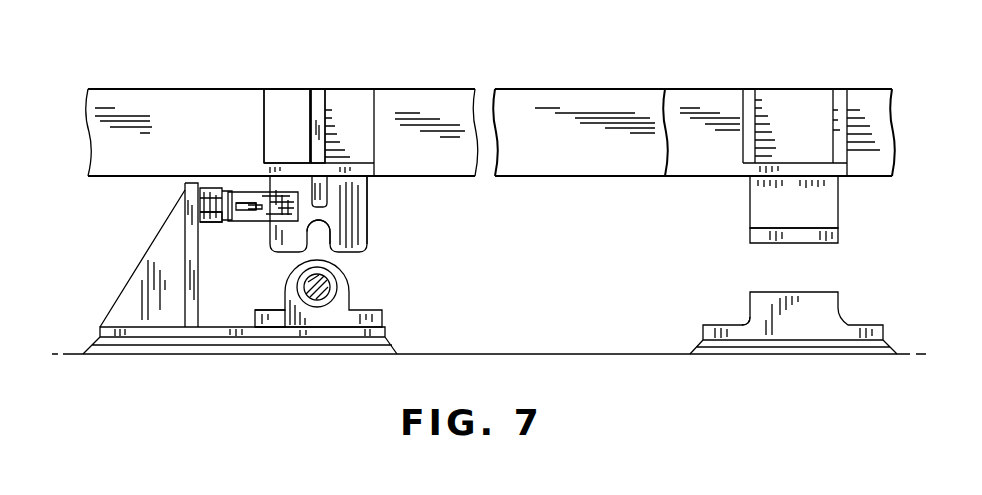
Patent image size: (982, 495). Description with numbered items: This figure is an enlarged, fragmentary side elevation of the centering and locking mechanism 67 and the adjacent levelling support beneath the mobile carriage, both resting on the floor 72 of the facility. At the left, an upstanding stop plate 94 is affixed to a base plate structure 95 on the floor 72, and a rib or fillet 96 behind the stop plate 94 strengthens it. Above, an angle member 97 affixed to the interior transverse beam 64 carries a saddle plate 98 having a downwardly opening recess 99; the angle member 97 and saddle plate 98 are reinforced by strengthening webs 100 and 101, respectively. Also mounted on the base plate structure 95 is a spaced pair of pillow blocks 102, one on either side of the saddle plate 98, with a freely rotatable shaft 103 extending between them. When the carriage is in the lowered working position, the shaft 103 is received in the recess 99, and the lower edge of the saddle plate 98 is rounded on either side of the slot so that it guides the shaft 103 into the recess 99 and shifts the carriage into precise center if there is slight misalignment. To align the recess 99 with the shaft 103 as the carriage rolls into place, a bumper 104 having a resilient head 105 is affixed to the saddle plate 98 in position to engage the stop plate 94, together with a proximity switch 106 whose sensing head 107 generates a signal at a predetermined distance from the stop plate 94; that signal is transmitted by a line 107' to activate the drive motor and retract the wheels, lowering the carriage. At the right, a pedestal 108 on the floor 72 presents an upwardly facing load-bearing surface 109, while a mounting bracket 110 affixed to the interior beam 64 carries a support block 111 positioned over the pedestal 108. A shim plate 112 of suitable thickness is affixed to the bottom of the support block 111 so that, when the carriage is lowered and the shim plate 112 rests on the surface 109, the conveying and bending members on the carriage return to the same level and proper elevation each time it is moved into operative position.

The interior transverse beam 64 is at (131, 104).
The centering and locking mechanism 67 is at (372, 237).
The floor 72 is at (505, 354).
The stop plate 94 is at (190, 240).
The base plate structure 95 is at (210, 333).
The rib or fillet 96 is at (128, 310).
The angle member 97 is at (292, 100).
The saddle plate 98 is at (367, 188).
The recess 99 is at (336, 232).
The strengthening web 100 is at (323, 105).
The strengthening web 101 is at (306, 180).
The pillow block 102 is at (288, 320).
The shaft 103 is at (327, 287).
The bumper 104 is at (213, 188).
The resilient head 105 is at (199, 204).
The set screw 106 is at (237, 200).
The sensing head 107 is at (220, 245).
The line 107' is at (251, 256).
The pedestal 108 is at (832, 316).
The load-bearing surface 109 is at (754, 315).
The mounting bracket 110 is at (797, 110).
The support block 111 is at (770, 200).
The shim plate 112 is at (760, 235).